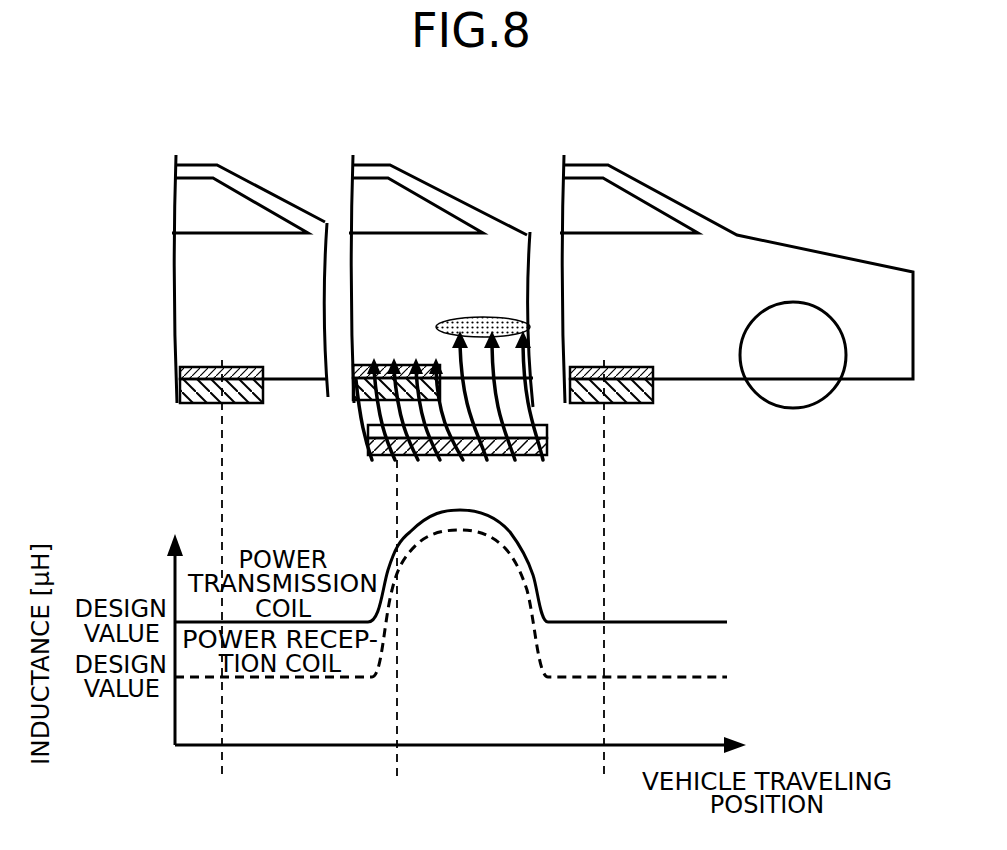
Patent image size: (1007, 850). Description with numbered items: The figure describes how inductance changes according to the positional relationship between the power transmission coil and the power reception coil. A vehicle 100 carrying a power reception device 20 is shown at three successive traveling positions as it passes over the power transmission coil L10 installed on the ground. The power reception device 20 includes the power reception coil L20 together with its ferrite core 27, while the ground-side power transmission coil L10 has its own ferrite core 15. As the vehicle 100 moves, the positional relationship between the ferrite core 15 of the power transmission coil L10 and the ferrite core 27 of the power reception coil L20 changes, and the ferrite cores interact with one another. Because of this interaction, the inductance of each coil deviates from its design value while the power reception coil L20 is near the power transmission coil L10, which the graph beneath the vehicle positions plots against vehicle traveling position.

The vehicle 100 is at (196, 163).
The power reception device 20 is at (439, 303).
The ferrite core of the power reception coil 27 is at (252, 367).
The power reception coil L20 is at (190, 404).
The power transmission coil L10 is at (367, 430).
The ferrite core of the power transmission coil 15 is at (367, 451).